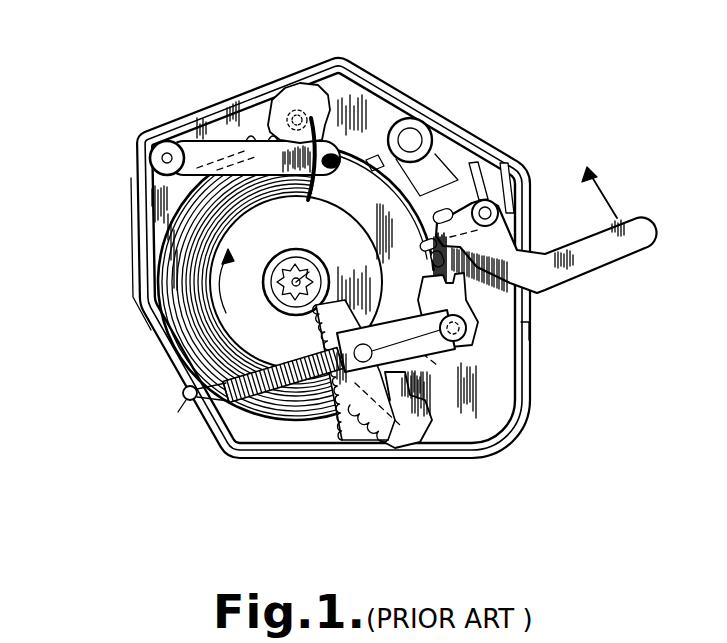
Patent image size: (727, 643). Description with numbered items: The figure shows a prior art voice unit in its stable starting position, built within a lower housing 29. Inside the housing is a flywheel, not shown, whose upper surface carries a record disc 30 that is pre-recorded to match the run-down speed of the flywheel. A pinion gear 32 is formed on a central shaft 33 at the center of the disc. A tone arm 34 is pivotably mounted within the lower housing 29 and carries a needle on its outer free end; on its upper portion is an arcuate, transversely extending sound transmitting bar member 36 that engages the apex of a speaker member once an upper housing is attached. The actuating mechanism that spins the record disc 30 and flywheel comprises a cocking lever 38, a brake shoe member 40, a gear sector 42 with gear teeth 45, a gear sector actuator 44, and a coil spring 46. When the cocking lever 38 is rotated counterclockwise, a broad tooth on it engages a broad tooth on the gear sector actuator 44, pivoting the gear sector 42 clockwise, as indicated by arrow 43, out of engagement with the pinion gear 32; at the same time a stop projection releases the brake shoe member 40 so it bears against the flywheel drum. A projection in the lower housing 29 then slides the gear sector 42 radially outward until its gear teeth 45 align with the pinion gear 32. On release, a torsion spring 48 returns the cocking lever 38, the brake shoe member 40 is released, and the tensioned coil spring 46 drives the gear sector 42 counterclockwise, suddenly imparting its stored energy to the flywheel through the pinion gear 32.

The lower housing 29 is at (410, 90).
The record disc 30 is at (196, 300).
The pinion gear 32 is at (273, 256).
The central shaft 33 is at (322, 267).
The tone arm 34 is at (240, 160).
The sound transmitting bar member 36 is at (343, 100).
The cocking lever 38 is at (590, 254).
The brake shoe member 40 is at (440, 173).
The gear sector 42 is at (383, 447).
The arrow 43 is at (417, 413).
The gear sector actuator 44 is at (437, 360).
The gear teeth 45 is at (310, 417).
The coil spring 46 is at (258, 407).
The torsion spring 48 is at (527, 193).